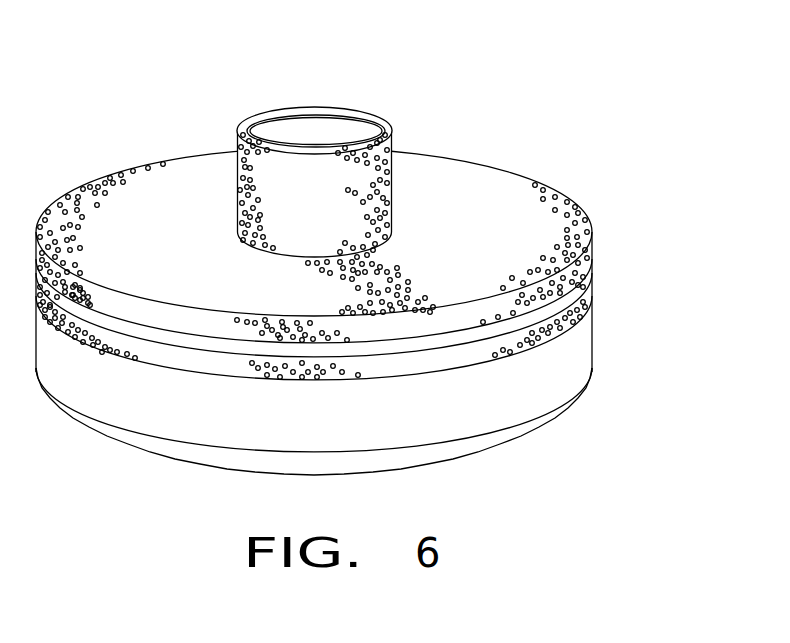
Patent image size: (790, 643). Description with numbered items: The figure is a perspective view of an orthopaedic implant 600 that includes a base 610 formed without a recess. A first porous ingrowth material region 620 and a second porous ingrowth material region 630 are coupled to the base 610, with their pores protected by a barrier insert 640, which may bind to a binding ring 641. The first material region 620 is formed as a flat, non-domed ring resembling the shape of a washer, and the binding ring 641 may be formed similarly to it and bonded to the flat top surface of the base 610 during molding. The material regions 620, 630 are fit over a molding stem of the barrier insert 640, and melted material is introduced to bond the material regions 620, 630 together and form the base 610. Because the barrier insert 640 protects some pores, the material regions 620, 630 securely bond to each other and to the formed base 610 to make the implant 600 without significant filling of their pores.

The implant 600 is at (373, 256).
The base 610 is at (600, 357).
The first porous ingrowth material region 620 is at (600, 246).
The second porous ingrowth material region 630 is at (390, 128).
The barrier insert 640 is at (590, 283).
The binding ring 641 is at (591, 308).